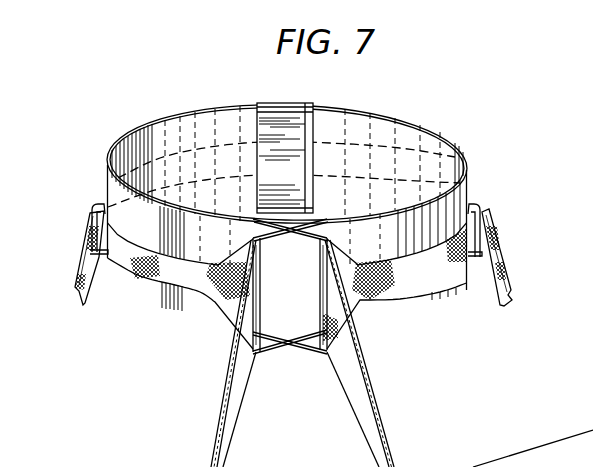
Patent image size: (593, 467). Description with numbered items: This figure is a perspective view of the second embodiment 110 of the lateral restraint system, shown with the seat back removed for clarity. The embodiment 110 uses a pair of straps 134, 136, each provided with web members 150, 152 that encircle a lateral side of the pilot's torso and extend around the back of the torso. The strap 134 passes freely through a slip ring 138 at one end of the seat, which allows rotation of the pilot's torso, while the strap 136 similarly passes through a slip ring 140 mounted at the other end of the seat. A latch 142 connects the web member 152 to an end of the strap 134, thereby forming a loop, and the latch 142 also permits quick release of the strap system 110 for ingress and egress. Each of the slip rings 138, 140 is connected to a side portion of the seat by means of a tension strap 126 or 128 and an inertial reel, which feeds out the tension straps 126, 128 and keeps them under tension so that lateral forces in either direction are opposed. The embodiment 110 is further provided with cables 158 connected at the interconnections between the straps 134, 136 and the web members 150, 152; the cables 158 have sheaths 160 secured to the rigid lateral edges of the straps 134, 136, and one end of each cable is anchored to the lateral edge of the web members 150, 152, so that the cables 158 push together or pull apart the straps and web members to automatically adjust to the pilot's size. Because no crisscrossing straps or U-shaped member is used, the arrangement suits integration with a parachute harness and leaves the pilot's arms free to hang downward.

The lateral restraint system embodiment 110 is at (447, 95).
The tension strap 126 is at (78, 268).
The tension strap 128 is at (500, 253).
The strap 134 is at (393, 288).
The strap 136 is at (187, 283).
The slip ring 138 is at (480, 200).
The slip ring 140 is at (100, 205).
The latch 142 is at (268, 107).
The web member 150 is at (452, 142).
The web member 152 is at (126, 138).
The cables 158 is at (320, 353).
The sheaths 160 is at (218, 442).